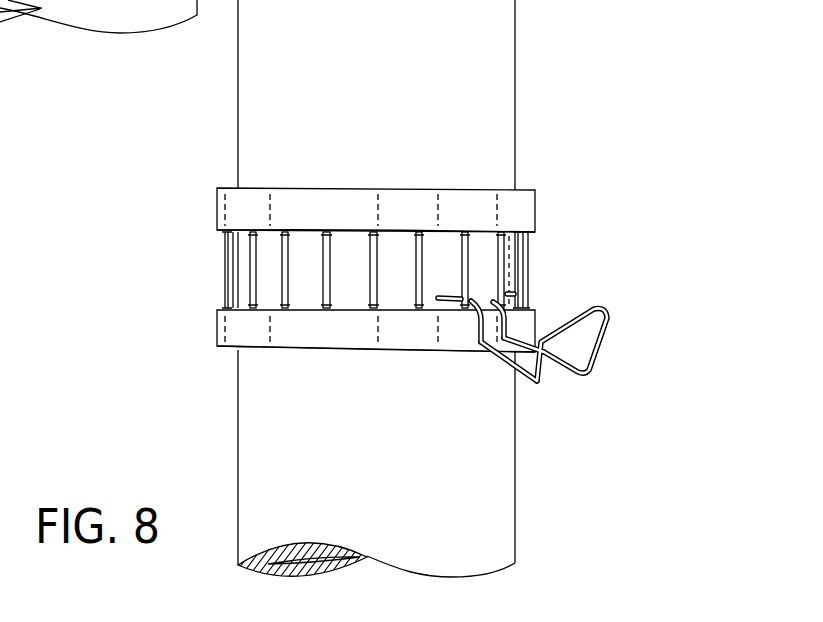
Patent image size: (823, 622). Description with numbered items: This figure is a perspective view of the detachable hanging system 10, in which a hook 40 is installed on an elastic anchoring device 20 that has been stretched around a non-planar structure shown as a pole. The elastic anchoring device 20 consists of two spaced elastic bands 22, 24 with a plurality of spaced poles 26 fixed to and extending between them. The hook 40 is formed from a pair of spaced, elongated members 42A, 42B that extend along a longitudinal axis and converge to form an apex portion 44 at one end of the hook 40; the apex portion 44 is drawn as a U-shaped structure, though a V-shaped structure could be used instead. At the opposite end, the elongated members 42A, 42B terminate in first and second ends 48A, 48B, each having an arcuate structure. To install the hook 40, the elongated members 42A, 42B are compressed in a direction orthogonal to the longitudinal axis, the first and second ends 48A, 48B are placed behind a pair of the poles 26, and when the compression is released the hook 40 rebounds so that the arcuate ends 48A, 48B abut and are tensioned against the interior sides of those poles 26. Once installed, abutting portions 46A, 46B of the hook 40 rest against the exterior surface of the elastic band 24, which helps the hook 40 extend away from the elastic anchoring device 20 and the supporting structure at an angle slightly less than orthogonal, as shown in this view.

The detachable hanging system 10 is at (190, 218).
The elastic anchoring device 20 is at (532, 170).
The elastic band 22 is at (303, 198).
The elastic band 24 is at (222, 342).
The plurality of spaced poles 26 is at (253, 273).
The hook 40 is at (518, 329).
The spaced elongated member 42A is at (513, 361).
The spaced elongated member 42B is at (561, 362).
The apex portion 44 is at (596, 306).
The abutting portion 46A is at (480, 329).
The abutting portion 46B is at (506, 330).
The first end 48A is at (441, 295).
The second end 48B is at (510, 290).